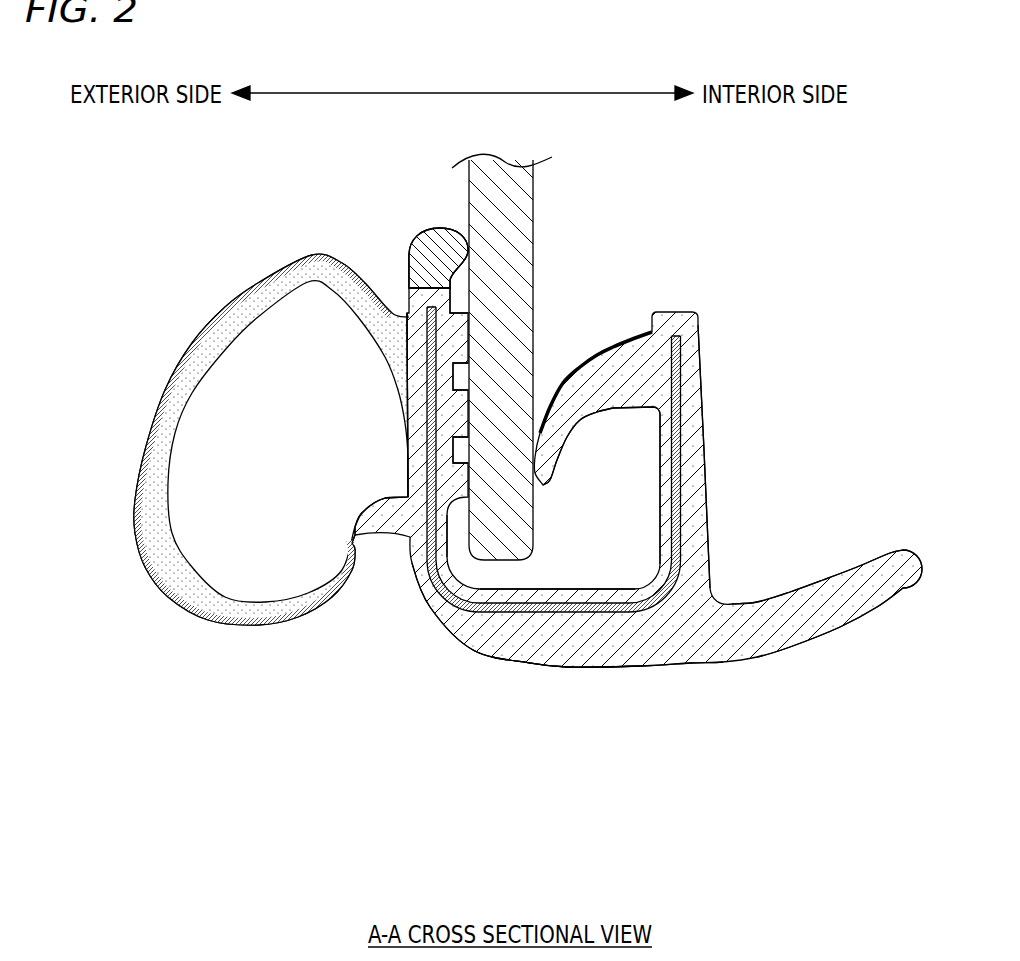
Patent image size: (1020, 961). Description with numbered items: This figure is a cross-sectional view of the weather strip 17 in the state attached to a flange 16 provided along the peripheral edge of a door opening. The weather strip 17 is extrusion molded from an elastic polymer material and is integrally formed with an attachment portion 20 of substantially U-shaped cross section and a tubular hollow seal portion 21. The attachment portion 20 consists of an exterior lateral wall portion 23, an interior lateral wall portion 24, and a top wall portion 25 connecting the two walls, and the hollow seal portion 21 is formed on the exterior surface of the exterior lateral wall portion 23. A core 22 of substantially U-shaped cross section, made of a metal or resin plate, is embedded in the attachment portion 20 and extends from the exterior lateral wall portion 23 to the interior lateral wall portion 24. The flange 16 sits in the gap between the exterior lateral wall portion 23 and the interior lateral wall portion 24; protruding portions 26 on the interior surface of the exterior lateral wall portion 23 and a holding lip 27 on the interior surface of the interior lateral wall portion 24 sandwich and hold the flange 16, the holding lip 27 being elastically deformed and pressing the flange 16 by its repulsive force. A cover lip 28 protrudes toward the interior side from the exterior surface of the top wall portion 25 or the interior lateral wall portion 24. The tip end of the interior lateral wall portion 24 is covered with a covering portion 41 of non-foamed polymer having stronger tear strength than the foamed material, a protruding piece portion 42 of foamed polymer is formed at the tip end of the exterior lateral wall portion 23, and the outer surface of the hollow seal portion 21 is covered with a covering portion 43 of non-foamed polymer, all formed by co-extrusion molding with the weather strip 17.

The flange 16 is at (535, 230).
The weather strip 17 is at (478, 680).
The attachment portion 20 is at (609, 680).
The hollow seal portion 21 is at (175, 410).
The core 22 is at (613, 610).
The exterior lateral wall portion 23 is at (397, 400).
The interior lateral wall portion 24 is at (712, 447).
The top wall portion 25 is at (560, 665).
The protruding portions 26 is at (458, 440).
The holding lip 27 is at (607, 412).
The cover lip 28 is at (860, 617).
The covering portion 41 is at (677, 310).
The protruding piece portion 42 is at (437, 230).
The covering portion 43 is at (218, 310).